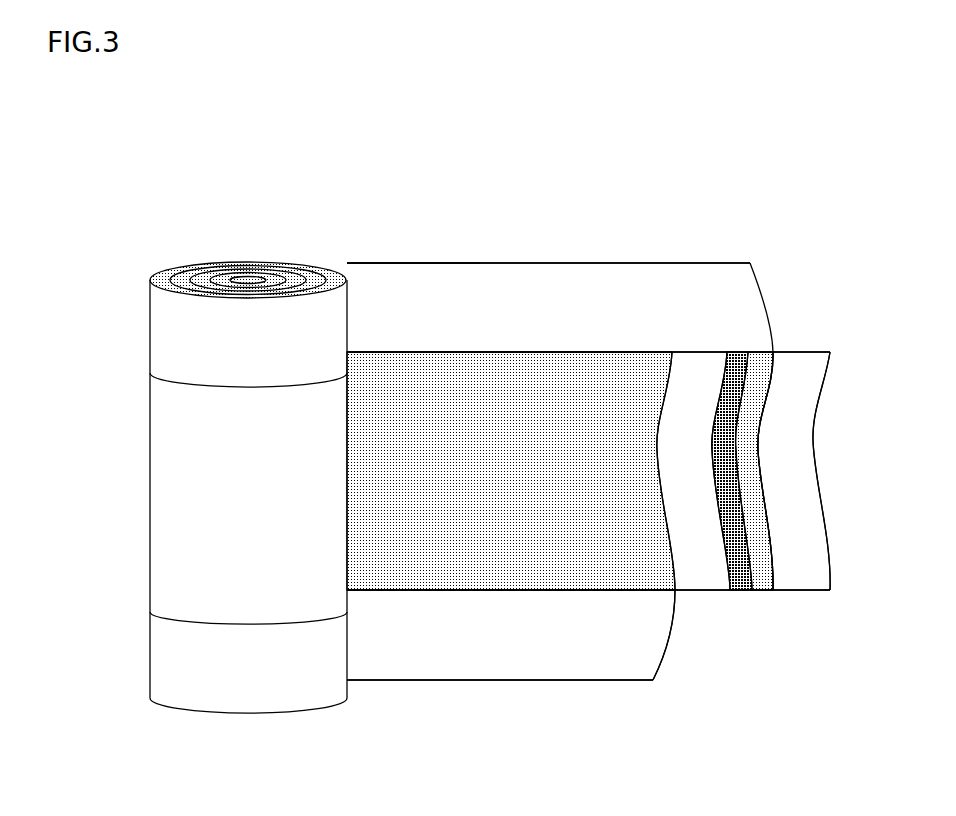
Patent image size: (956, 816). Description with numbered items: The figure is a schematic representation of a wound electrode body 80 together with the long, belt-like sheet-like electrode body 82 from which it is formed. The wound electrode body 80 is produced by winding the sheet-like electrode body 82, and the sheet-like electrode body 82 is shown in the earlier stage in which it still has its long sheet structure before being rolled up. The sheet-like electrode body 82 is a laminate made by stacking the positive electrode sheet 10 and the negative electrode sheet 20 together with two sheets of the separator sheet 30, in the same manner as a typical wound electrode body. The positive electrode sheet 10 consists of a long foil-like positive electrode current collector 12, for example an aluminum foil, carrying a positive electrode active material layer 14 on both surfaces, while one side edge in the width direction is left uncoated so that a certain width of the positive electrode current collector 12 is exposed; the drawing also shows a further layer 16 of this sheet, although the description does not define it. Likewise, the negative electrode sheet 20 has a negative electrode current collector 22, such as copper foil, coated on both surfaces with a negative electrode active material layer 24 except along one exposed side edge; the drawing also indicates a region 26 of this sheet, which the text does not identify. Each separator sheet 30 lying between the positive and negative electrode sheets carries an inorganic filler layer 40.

The positive electrode sheet 10 is at (423, 680).
The positive electrode current collector 12 is at (507, 680).
The positive electrode active material layer 14 is at (615, 570).
The intermediate layer 16 is at (552, 660).
The negative electrode sheet 20 is at (487, 263).
The negative electrode current collector 22 is at (603, 263).
The negative electrode active material layer 24 is at (762, 360).
The release sheet back surface 26 is at (405, 278).
The separator sheet 30 is at (708, 578).
The inorganic filler layer 40 is at (740, 588).
The wound electrode body 80 is at (142, 252).
The sheet-like electrode body 82 is at (755, 202).